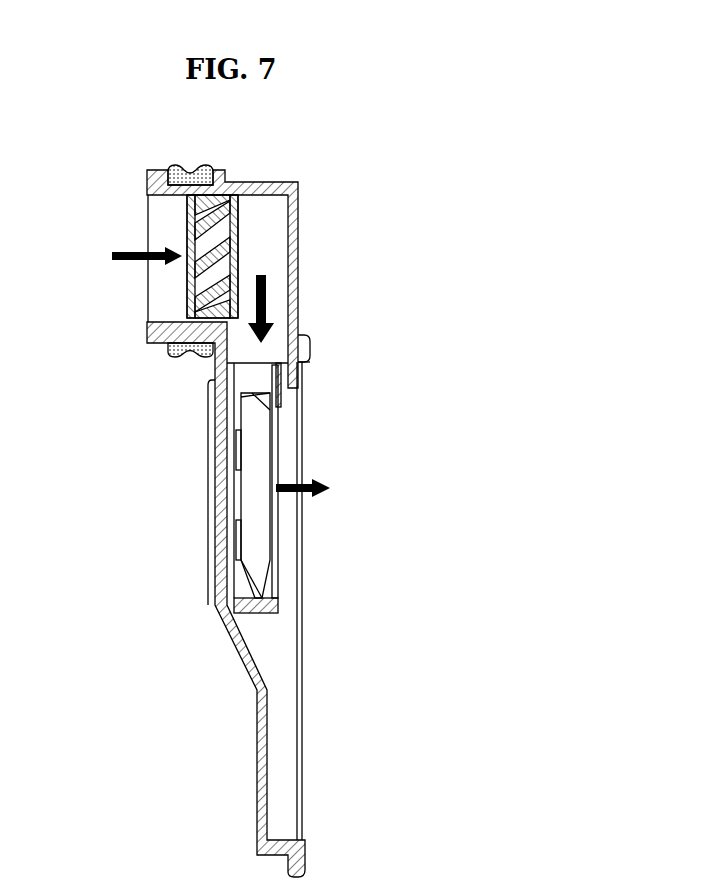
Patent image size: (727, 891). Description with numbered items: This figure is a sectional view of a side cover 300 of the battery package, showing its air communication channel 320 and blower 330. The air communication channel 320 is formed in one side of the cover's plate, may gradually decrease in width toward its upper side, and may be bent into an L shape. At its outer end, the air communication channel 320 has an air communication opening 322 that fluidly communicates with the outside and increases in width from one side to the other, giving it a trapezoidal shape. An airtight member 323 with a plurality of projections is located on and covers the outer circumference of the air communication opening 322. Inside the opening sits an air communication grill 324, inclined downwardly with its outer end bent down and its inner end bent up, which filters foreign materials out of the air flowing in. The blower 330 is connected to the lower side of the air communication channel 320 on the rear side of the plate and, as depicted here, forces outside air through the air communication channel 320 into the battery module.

The side cover 300 is at (283, 160).
The air communication channel 320 is at (299, 190).
The air communication opening 322 is at (163, 222).
The airtight member 323 is at (183, 163).
The air communication grill 324 is at (187, 272).
The blower 330 is at (266, 462).